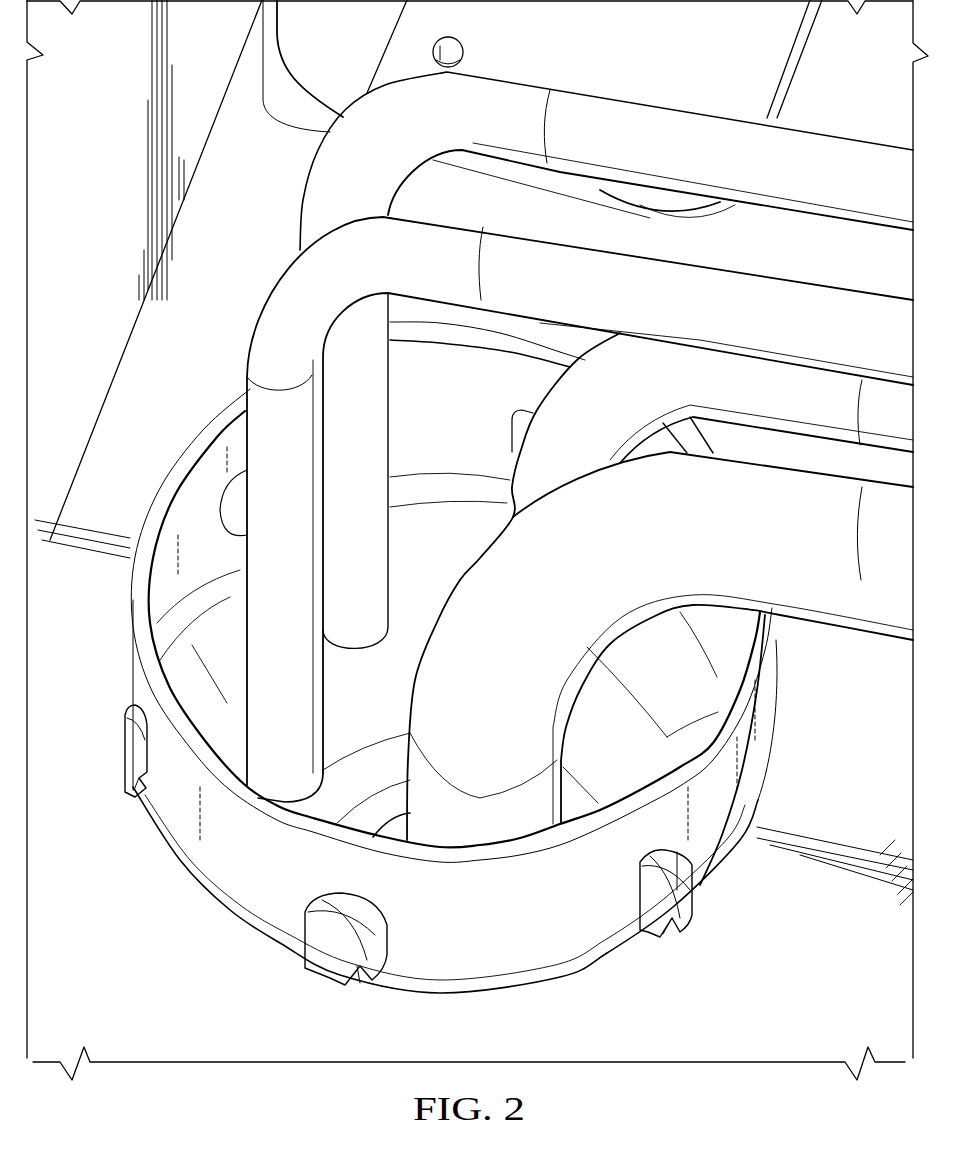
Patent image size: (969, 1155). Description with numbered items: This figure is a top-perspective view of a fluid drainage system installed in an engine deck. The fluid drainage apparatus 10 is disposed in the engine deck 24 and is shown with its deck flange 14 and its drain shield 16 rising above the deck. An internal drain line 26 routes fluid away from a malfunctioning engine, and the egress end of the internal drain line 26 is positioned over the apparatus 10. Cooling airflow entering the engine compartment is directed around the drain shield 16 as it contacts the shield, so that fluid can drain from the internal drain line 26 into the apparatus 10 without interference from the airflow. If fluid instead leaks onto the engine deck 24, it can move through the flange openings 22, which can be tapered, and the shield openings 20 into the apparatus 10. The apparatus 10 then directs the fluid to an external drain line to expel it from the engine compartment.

The fluid drainage apparatus 10 is at (178, 410).
The deck flange 14 is at (197, 882).
The drain shield 16 is at (170, 793).
The shield openings 20 is at (348, 922).
The flange openings 22 is at (116, 770).
The engine deck 24 is at (829, 982).
The internal drain line 26 is at (323, 185).